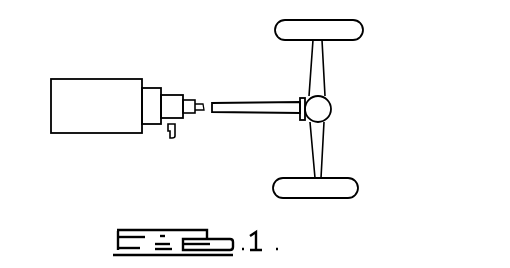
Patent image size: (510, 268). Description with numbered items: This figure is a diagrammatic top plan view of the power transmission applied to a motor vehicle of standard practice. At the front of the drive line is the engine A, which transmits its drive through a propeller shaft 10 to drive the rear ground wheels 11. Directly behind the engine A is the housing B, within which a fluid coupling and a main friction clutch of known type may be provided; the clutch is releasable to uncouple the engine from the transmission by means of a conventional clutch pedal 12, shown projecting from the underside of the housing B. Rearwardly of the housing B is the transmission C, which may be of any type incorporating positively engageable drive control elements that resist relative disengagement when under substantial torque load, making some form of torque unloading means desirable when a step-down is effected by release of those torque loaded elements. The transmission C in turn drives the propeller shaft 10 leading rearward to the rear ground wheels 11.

The engine A is at (106, 84).
The housing B is at (157, 87).
The transmission C is at (173, 96).
The propeller shaft 10 is at (270, 85).
The rear ground wheels 11 is at (342, 182).
The clutch pedal 12 is at (171, 138).